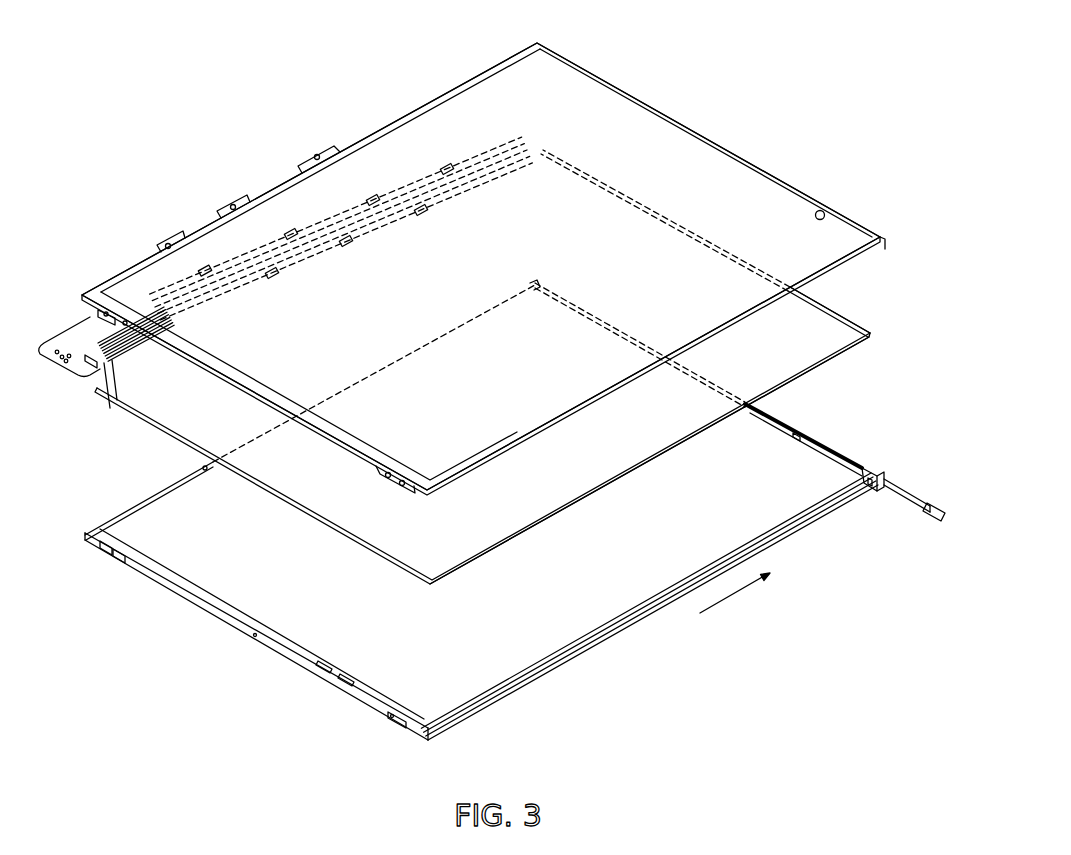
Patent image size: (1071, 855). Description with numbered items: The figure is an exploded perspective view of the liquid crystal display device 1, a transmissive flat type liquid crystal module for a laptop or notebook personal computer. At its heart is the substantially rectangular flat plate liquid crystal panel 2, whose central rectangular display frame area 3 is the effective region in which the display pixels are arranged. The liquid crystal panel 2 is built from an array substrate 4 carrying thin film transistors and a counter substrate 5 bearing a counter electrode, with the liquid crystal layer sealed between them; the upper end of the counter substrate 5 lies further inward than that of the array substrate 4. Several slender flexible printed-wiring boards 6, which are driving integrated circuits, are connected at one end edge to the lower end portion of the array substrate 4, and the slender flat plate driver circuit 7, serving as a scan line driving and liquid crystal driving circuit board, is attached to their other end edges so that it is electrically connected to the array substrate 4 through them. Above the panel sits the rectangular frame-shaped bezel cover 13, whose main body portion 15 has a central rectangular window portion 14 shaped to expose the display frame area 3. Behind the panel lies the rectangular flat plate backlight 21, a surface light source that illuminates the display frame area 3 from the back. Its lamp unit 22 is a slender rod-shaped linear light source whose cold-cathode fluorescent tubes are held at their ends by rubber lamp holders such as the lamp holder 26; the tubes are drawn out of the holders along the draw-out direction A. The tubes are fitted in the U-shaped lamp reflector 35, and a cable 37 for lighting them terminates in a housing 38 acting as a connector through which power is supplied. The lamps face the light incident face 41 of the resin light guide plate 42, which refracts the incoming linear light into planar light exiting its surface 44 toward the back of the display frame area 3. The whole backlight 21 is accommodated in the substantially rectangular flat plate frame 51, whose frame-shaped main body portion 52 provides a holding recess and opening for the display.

The liquid crystal display device 1 is at (732, 50).
The liquid crystal panel 2 is at (866, 327).
The display frame area 3 is at (823, 320).
The array substrate 4 is at (850, 350).
The counter substrate 5 is at (813, 367).
The printed-wiring boards 6 is at (515, 150).
The driver circuit 7 is at (284, 178).
The bezel cover 13 is at (753, 160).
The window portion 14 is at (821, 211).
The main body portion 15 is at (613, 82).
The backlight 21 is at (776, 455).
The lamp unit 22 is at (880, 475).
The lamp holder 26 is at (865, 478).
The lamp reflector 35 is at (790, 527).
The cable 37 is at (910, 505).
The housing 38 is at (937, 513).
The light incident face 41 is at (608, 623).
The light guide plate 42 is at (150, 523).
The surface 44 is at (327, 637).
The frame 51 is at (367, 703).
The main body portion 52 is at (200, 597).
The draw-out direction A is at (712, 603).